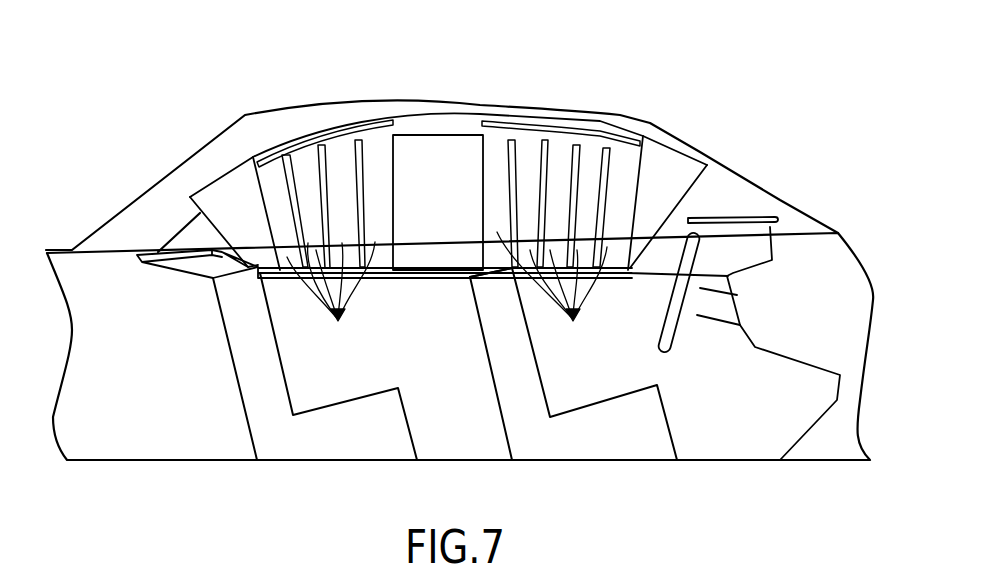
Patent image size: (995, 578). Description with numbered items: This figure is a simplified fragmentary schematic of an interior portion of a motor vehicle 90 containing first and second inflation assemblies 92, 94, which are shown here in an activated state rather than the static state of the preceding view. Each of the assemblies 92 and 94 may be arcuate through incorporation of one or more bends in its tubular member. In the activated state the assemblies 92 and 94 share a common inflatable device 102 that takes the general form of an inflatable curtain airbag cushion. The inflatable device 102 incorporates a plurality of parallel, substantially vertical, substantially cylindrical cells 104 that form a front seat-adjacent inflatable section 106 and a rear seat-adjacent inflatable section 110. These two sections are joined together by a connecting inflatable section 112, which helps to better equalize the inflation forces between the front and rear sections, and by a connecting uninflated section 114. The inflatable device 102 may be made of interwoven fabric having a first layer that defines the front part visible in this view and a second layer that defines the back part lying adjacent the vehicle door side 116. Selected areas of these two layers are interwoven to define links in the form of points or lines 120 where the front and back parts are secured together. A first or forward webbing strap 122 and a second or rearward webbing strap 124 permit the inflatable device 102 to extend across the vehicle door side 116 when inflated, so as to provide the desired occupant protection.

The motor vehicle 90 is at (716, 116).
The first assembly 92 is at (575, 108).
The second assembly 94 is at (300, 128).
The inflatable device 102 is at (419, 237).
The cells 104 is at (447, 291).
The front seat-adjacent inflatable section 106 is at (560, 177).
The rear seat-adjacent inflatable section 110 is at (345, 190).
The connecting inflatable section 112 is at (438, 128).
The connecting uninflated section 114 is at (446, 245).
The vehicle door side 116 is at (363, 365).
The points or lines 120 is at (360, 181).
The first or forward webbing strap 122 is at (723, 220).
The second or rearward webbing strap 124 is at (183, 252).